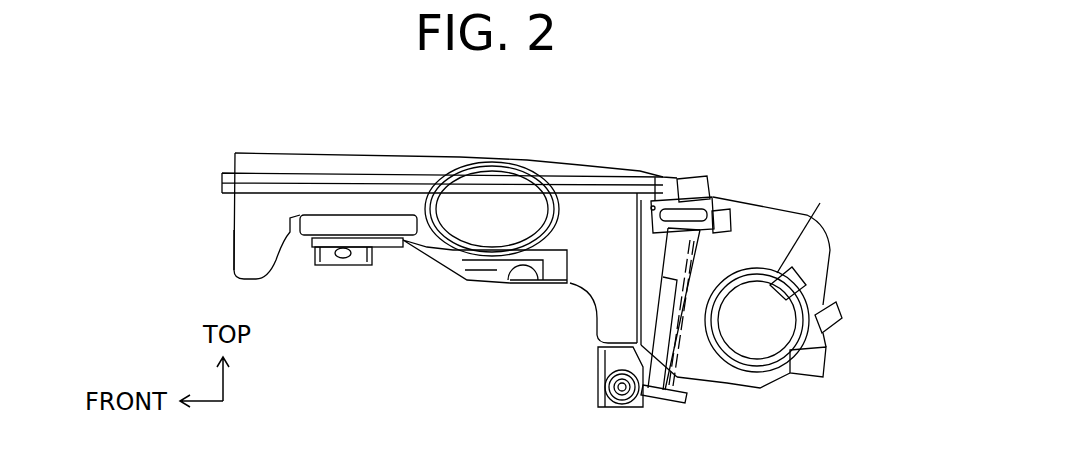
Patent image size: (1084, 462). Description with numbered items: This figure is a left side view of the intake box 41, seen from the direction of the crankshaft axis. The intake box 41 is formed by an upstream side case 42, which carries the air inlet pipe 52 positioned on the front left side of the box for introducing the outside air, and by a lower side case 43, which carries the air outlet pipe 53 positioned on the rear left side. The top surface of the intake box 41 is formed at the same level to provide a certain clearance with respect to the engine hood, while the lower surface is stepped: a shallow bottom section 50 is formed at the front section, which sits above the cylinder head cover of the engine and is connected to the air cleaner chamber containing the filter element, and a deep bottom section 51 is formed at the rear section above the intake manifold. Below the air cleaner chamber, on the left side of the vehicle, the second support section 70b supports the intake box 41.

The intake box 41 is at (800, 143).
The upstream side case 42 is at (598, 163).
The lower side case 43 is at (805, 204).
The shallow bottom section 50 is at (250, 225).
The deep bottom section 51 is at (607, 318).
The air inlet pipe 52 is at (473, 167).
The air outlet pipe 53 is at (833, 347).
The second support section 70b is at (630, 397).